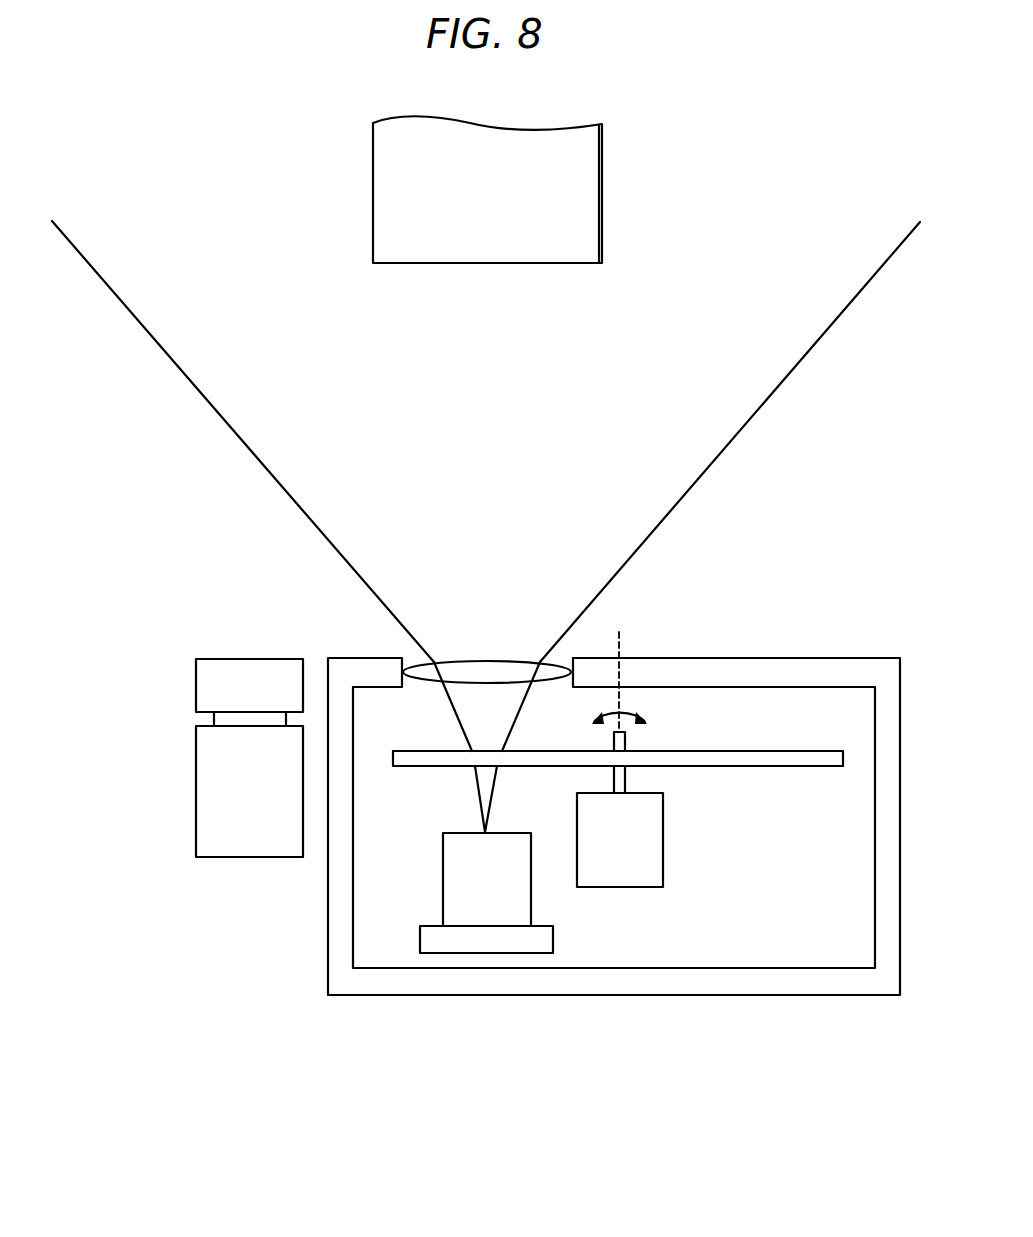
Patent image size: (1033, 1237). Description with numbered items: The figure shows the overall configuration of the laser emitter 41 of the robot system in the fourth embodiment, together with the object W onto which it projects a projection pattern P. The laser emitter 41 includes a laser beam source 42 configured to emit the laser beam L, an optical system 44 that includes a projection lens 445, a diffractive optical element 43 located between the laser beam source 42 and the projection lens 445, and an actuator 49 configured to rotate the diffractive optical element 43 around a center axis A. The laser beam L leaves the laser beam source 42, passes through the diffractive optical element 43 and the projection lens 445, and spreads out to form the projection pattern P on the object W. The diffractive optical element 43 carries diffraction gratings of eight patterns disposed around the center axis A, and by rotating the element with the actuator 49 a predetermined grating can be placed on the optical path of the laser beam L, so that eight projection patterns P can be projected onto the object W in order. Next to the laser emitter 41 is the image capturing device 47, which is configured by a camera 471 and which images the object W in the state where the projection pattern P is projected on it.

The object W is at (589, 213).
The projection pattern P is at (490, 263).
The laser beam L is at (780, 382).
The laser emitter 41 is at (686, 1026).
The laser beam source 42 is at (485, 906).
The diffractive optical element 43 is at (778, 750).
The optical system 44 is at (487, 624).
The projection lens 445 is at (486, 666).
The image capturing device 47 is at (199, 796).
The camera 471 is at (245, 848).
The actuator 49 is at (612, 857).
The center axis A is at (619, 667).